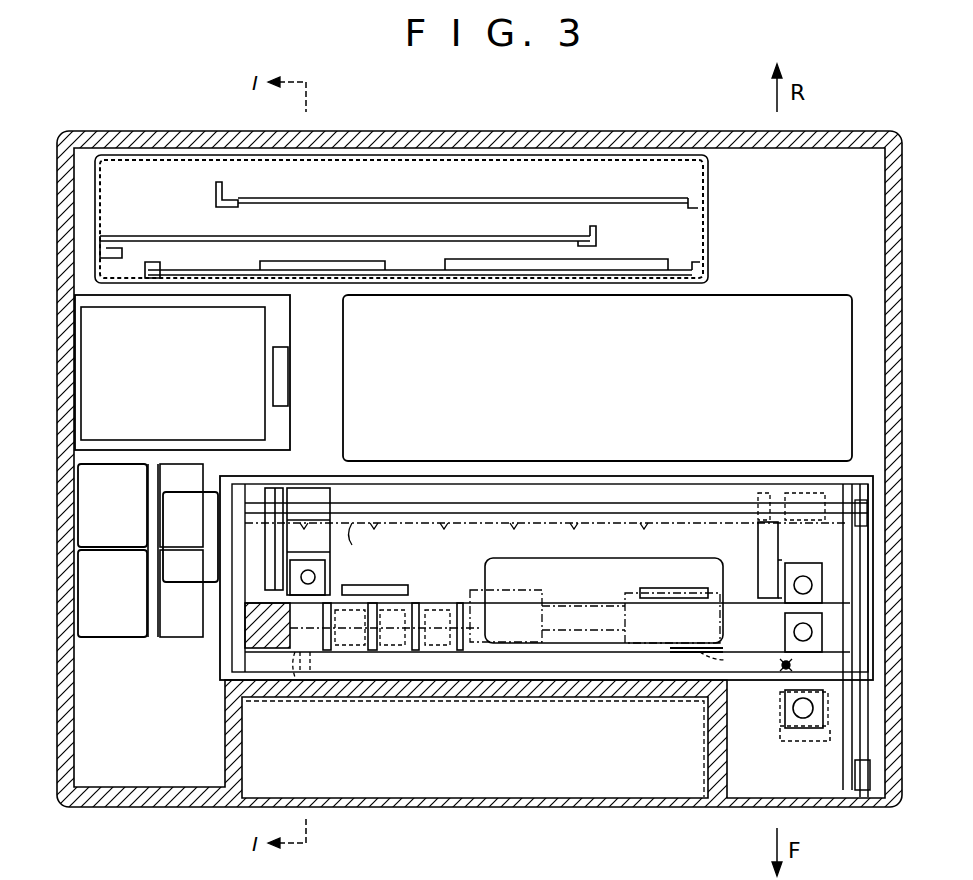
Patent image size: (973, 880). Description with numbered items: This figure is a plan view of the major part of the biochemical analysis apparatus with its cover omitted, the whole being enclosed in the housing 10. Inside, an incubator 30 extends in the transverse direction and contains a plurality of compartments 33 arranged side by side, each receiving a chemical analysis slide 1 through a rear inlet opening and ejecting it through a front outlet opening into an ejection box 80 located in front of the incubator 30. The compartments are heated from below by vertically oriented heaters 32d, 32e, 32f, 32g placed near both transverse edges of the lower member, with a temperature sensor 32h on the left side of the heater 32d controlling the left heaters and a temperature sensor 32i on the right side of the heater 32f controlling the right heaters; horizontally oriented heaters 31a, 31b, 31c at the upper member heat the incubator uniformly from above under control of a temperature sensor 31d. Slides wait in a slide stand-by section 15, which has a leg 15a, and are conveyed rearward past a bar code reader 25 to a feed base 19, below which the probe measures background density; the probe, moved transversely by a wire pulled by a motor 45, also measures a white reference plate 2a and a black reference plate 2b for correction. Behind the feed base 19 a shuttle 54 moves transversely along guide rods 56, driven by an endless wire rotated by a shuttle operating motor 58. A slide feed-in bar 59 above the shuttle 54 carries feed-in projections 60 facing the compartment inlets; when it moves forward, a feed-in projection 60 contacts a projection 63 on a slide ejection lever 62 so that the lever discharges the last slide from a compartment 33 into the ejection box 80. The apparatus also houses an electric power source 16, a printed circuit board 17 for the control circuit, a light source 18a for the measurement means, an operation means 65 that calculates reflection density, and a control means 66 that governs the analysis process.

The chemical analysis slide 1 is at (326, 569).
The white reference plate 2a is at (758, 575).
The black reference plate 2b is at (772, 592).
The housing 10 is at (60, 641).
The slide stand-by section 15 is at (836, 708).
The leg of fixing member 15a is at (780, 736).
The electric power source 16 is at (602, 381).
The printed circuit board 17 is at (406, 231).
The light source 18a is at (189, 378).
The feed base 19 is at (870, 566).
The bar code reader 25 is at (783, 668).
The incubator 30 is at (560, 556).
The heater 31a is at (478, 592).
The heater 31b is at (550, 577).
The heater 31c is at (625, 613).
The temperature sensor 31d is at (245, 649).
The heater 32d is at (300, 690).
The heater 32e is at (400, 572).
The heater 32f is at (632, 666).
The heater 32g is at (656, 588).
The temperature sensor 32h is at (296, 692).
The temperature sensor 32i is at (702, 665).
The compartment 33 is at (458, 651).
The motor 45 is at (126, 598).
The shuttle 54 is at (322, 472).
The guide rod 56 is at (528, 511).
The shuttle operating motor 58 is at (166, 506).
The slide feed-in bar 59 is at (487, 511).
The feed-in projection 60 is at (353, 524).
The slide ejection lever 62 is at (243, 587).
The projection 63 is at (256, 551).
The operation means 65 is at (640, 262).
The control means 66 is at (305, 256).
The ejection box 80 is at (501, 781).